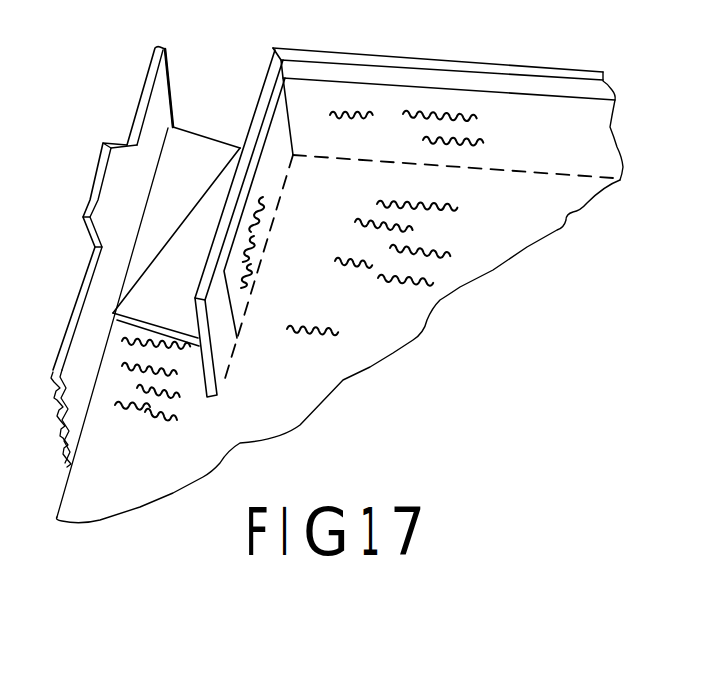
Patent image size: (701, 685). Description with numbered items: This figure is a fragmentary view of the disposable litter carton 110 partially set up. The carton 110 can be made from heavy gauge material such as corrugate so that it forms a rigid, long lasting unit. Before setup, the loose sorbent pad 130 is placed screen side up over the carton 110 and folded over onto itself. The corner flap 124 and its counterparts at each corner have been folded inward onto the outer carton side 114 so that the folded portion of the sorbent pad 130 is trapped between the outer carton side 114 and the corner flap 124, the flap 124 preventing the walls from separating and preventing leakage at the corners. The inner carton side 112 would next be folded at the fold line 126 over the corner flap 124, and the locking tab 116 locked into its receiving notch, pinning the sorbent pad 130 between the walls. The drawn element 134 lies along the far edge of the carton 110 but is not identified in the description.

The panel 110 is at (484, 289).
The post 112 is at (167, 57).
The rail 114 is at (204, 153).
The flange 116 is at (110, 181).
The corner 124 is at (278, 45).
The diagonal brace 126 is at (152, 179).
The edge 130 is at (532, 105).
The edge strip 134 is at (445, 92).